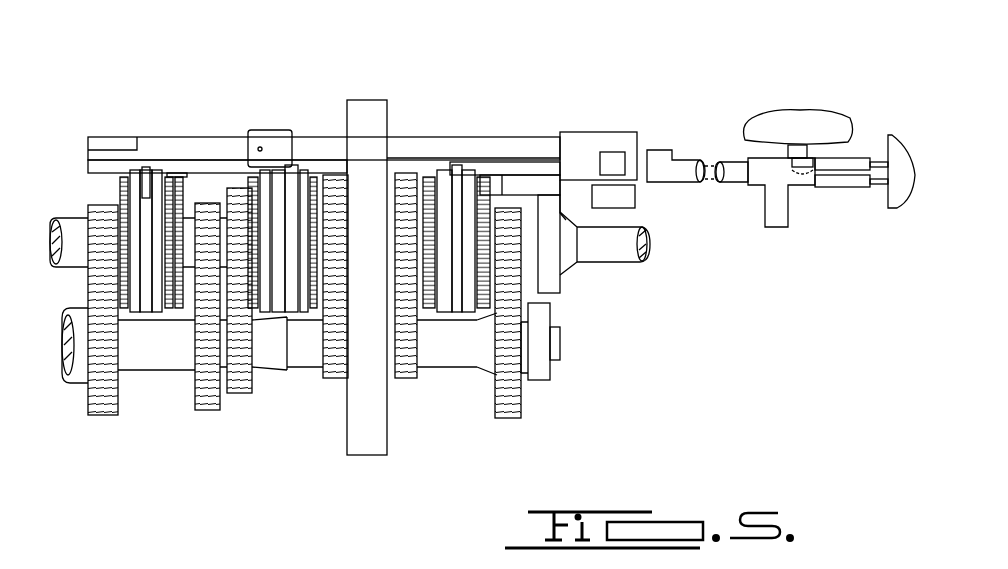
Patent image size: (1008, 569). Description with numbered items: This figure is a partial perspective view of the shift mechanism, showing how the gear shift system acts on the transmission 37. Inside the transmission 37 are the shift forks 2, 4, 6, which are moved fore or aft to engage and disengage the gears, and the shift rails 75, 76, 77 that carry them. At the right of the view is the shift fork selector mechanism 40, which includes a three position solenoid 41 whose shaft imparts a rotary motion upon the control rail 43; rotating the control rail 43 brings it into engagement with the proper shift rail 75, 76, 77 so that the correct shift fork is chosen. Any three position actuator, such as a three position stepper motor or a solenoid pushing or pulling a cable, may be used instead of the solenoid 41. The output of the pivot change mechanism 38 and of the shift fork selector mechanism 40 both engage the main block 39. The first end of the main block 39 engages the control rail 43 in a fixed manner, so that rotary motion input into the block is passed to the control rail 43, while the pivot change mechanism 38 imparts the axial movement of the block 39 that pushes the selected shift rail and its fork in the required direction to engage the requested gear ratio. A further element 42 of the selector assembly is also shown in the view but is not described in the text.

The shift fork 2 is at (456, 178).
The shift fork 4 is at (289, 178).
The shift fork 6 is at (146, 167).
The transmission 37 is at (289, 90).
The pivot change mechanism 38 is at (814, 96).
The main block 39 is at (815, 182).
The shift fork selector mechanism 40 is at (861, 219).
The three position solenoid 41 is at (898, 202).
The shift rods 42 is at (872, 162).
The control rail 43 is at (683, 165).
The shift rail 75 is at (423, 142).
The shift rail 76 is at (517, 165).
The shift rail 77 is at (577, 193).